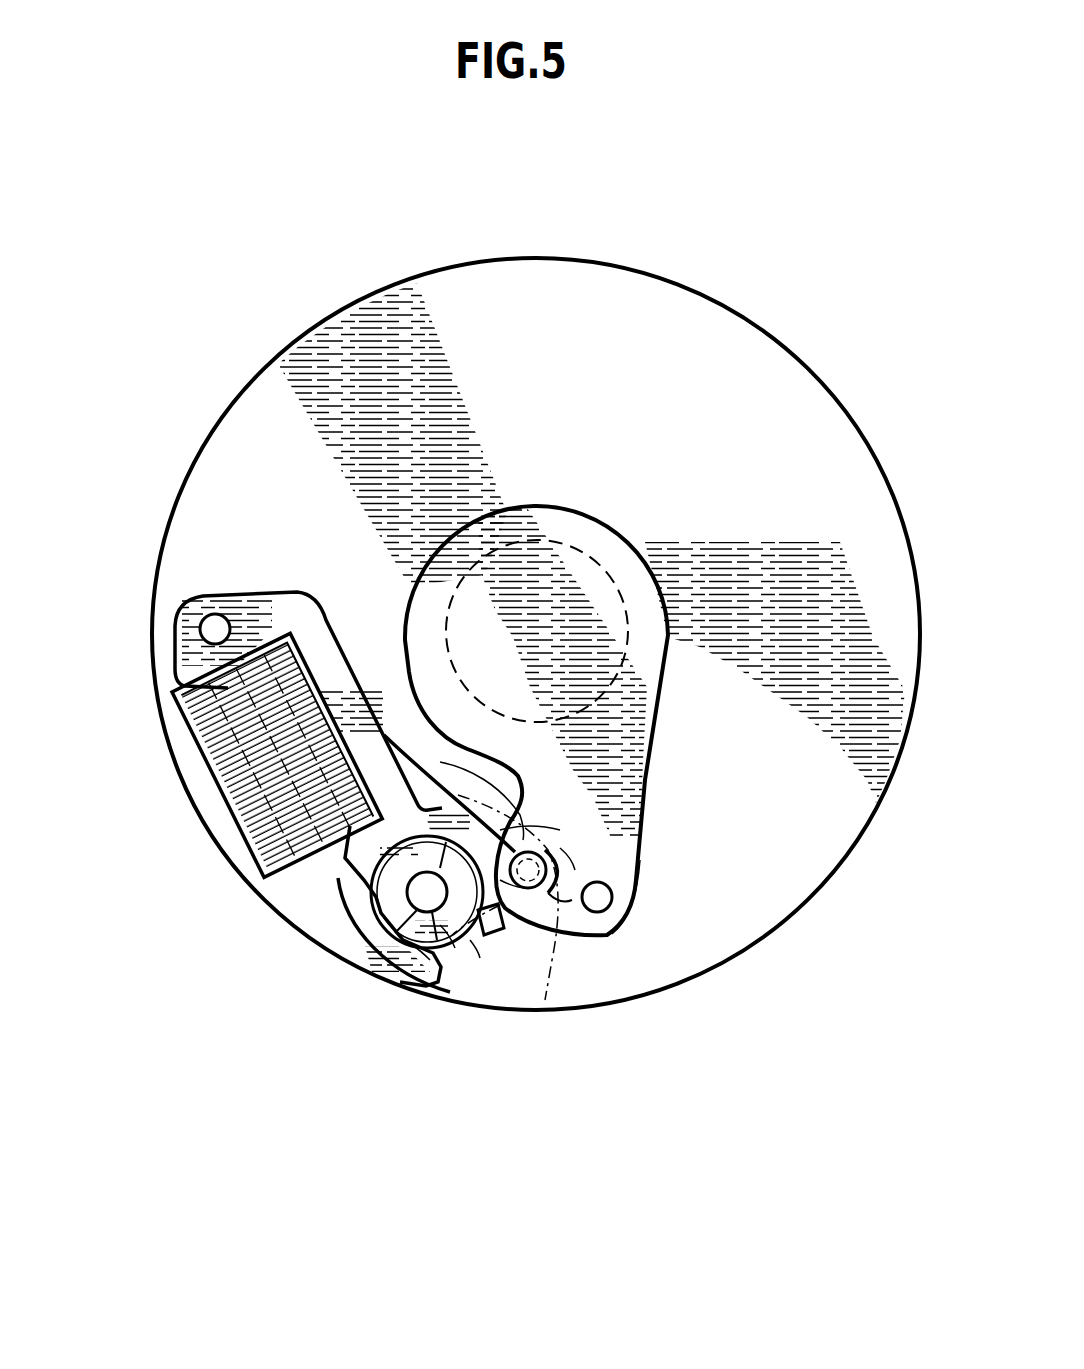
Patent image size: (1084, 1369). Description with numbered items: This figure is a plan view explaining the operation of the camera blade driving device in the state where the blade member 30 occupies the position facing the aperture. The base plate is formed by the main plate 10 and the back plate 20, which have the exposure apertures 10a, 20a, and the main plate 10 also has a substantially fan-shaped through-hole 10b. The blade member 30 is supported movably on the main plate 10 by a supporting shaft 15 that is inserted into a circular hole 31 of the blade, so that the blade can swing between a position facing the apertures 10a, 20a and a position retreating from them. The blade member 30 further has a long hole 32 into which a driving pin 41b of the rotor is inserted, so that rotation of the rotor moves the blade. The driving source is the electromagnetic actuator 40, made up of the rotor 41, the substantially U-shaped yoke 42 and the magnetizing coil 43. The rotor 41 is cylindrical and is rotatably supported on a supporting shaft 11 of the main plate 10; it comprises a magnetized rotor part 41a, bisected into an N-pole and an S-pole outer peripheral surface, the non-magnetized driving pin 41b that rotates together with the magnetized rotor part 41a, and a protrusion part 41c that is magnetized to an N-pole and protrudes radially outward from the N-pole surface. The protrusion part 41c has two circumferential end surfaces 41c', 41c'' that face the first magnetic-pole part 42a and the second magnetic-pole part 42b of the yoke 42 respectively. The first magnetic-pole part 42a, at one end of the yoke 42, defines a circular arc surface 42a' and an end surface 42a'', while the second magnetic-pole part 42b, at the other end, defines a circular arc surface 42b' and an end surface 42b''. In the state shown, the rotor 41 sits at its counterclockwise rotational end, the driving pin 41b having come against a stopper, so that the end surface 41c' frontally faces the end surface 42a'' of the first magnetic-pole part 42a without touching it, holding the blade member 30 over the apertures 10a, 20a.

The main plate 10 is at (536, 590).
The back plate 20 is at (692, 280).
The exposure aperture 10a is at (623, 598).
The exposure aperture 20a is at (592, 552).
The through-hole 10b is at (547, 945).
The supporting shaft 11 is at (458, 920).
The supporting shaft 15 is at (614, 938).
The blade member 30 is at (538, 496).
The circular hole 31 is at (597, 913).
The long hole 32 is at (535, 905).
The electromagnetic actuator 40 is at (220, 820).
The rotor 41 is at (328, 913).
The magnetized rotor part 41a is at (522, 795).
The driving pin 41b is at (600, 876).
The protrusion part 41c is at (474, 1077).
The end surface 41c' is at (668, 837).
The end surface 41c'' is at (426, 1080).
The yoke 42 is at (322, 903).
The first magnetic-pole part 42a is at (647, 797).
The circular arc surface 42a' is at (385, 715).
The end surface 42a'' is at (625, 885).
The second magnetic-pole part 42b is at (352, 999).
The circular arc surface 42b' is at (361, 1069).
The end surface 42b'' is at (405, 1037).
The magnetizing coil 43 is at (240, 858).